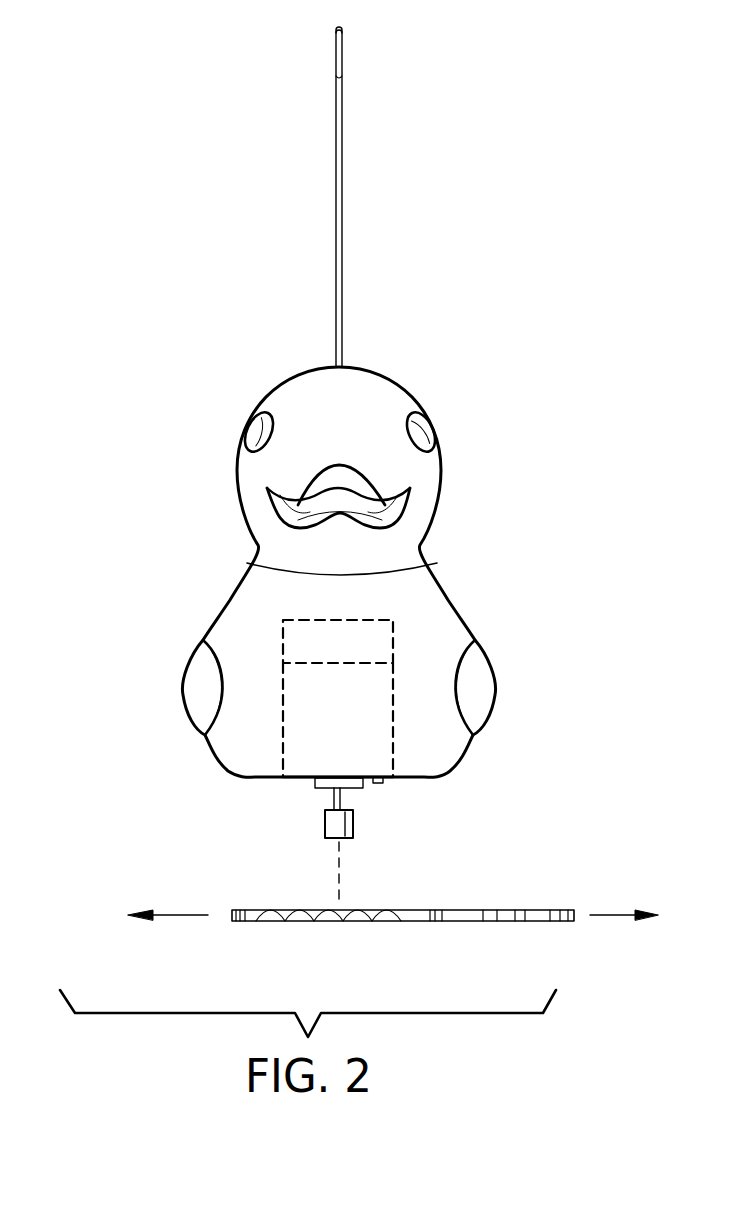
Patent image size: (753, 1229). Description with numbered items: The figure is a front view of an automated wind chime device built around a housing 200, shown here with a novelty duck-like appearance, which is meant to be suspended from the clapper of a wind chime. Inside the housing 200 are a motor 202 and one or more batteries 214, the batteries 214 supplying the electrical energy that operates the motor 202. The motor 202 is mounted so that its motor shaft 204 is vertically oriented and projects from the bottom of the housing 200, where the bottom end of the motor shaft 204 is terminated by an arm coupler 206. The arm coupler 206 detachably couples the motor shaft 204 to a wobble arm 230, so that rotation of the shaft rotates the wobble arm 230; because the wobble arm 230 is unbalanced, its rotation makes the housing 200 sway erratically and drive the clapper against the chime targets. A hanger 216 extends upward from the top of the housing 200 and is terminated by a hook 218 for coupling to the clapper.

The housing 200 is at (243, 584).
The motor 202 is at (305, 745).
The motor shaft 204 is at (340, 800).
The arm coupler 206 is at (325, 822).
The one or more batteries 214 is at (373, 637).
The hanger 216 is at (340, 205).
The hook 218 is at (339, 44).
The wobble arm 230 is at (533, 910).